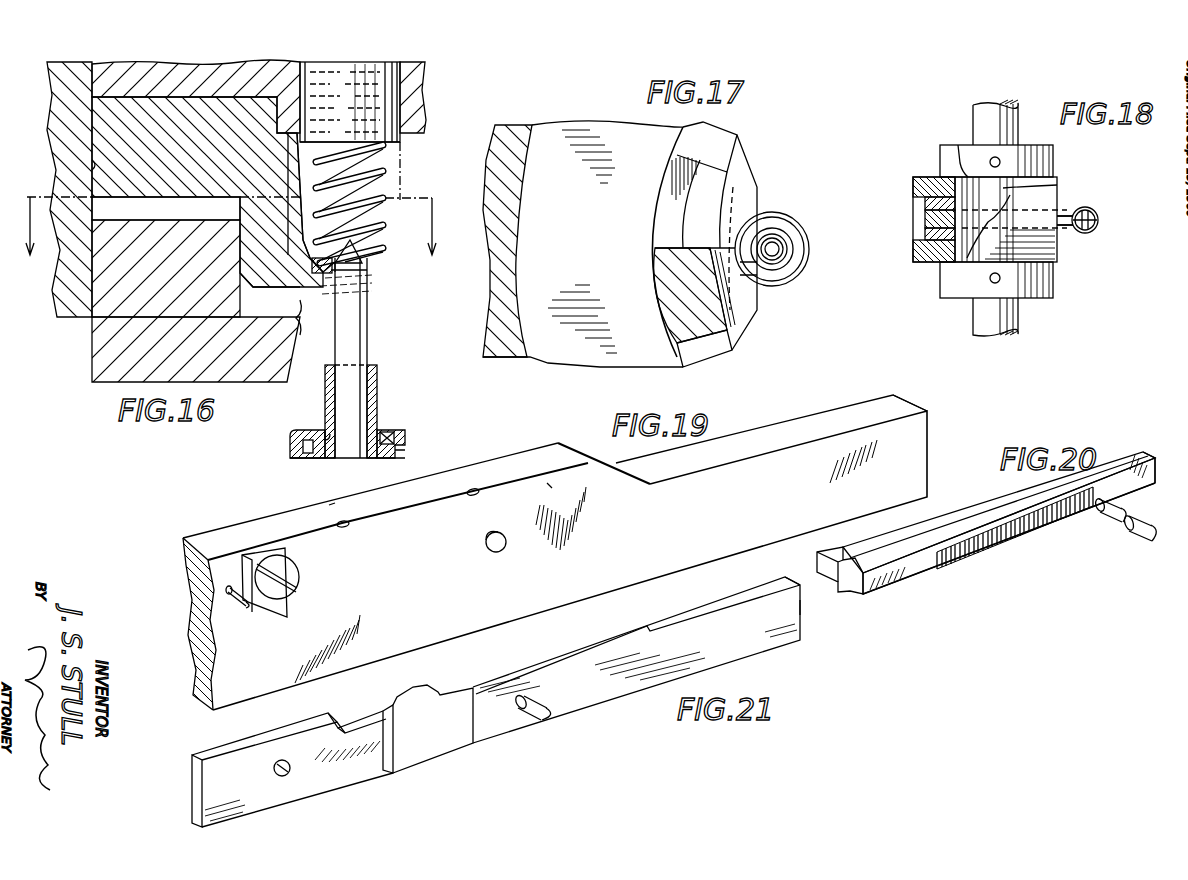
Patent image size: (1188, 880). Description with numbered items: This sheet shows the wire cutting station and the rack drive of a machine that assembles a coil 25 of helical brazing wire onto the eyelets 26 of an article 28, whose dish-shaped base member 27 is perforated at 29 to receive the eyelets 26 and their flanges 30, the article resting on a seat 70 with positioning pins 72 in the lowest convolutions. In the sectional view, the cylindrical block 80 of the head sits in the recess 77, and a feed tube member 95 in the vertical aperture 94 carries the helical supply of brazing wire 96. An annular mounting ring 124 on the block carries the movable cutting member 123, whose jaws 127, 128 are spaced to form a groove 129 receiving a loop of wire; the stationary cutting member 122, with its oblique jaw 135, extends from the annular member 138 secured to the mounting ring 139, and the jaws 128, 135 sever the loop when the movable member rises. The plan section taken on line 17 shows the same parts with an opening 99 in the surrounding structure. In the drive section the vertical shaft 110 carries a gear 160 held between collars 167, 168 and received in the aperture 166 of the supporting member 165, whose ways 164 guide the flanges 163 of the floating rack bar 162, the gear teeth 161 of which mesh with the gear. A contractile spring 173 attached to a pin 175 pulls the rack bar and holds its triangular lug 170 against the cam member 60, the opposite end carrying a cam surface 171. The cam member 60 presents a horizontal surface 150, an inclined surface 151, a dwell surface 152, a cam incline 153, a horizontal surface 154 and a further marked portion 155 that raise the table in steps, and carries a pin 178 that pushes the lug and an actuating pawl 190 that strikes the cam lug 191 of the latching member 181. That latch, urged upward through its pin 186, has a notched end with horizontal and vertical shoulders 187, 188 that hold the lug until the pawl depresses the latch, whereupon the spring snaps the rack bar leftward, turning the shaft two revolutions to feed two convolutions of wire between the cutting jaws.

In FIG. 16, the cylindrical block 80 is at (103, 82).
In FIG. 16, the annular mounting ring 124 is at (100, 122).
In FIG. 16, the recess 77 is at (97, 168).
In FIG. 16, the section line 17— 17 is at (231, 198).
In FIG. 16, the slot 99 is at (72, 279).
In FIG. 17, the slot 99 is at (497, 348).
In FIG. 16, the mounting ring 139 is at (100, 302).
In FIG. 17, the mounting ring 139 is at (557, 355).
In FIG. 16, the annular member 138 is at (105, 370).
In FIG. 17, the annular member 138 is at (717, 137).
In FIG. 16, the groove 129 is at (270, 291).
In FIG. 16, the stationary cutting member 122 is at (315, 244).
In FIG. 17, the stationary cutting member 122 is at (712, 165).
In FIG. 16, the movable cutting member 123 is at (300, 210).
In FIG. 17, the movable cutting member 123 is at (705, 328).
In FIG. 16, the jaw 135 is at (320, 243).
In FIG. 17, the jaw 135 is at (750, 188).
In FIG. 16, the vertical aperture 94 is at (398, 95).
In FIG. 16, the feed tube member 95 is at (400, 141).
In FIG. 16, the helical supply of brazing wire 96 is at (395, 165).
In FIG. 17, the helical supply of brazing wire 96 is at (788, 226).
In FIG. 16, the jaw 127 is at (370, 262).
In FIG. 17, the jaw 127 is at (752, 306).
In FIG. 16, the jaw 128 is at (362, 284).
In FIG. 16, the coil 25 is at (380, 301).
In FIG. 16, the positioning pin 72 is at (367, 335).
In FIG. 17, the positioning pin 72 is at (778, 262).
In FIG. 16, the eyelet 26 is at (378, 385).
In FIG. 16, the article 28 is at (297, 432).
In FIG. 16, the perforation 29 is at (328, 428).
In FIG. 16, the dish-shaped base member 27 is at (406, 437).
In FIG. 16, the flange 30 is at (387, 432).
In FIG. 16, the seat 70 is at (405, 452).
In FIG. 18, the vertical shaft 110 is at (985, 115).
In FIG. 18, the aperture 166 is at (960, 160).
In FIG. 18, the supporting member 165 is at (930, 177).
In FIG. 18, the ways 164 is at (918, 190).
In FIG. 18, the guide flange 163 is at (920, 208).
In FIG. 20, the guide flange 163 is at (985, 504).
In FIG. 18, the gear teeth 161 is at (942, 223).
In FIG. 20, the gear teeth 161 is at (1035, 537).
In FIG. 18, the floating rack bar 162 is at (922, 238).
In FIG. 20, the floating rack bar 162 is at (918, 586).
In FIG. 18, the collar 168 is at (955, 285).
In FIG. 18, the collar 167 is at (1040, 160).
In FIG. 18, the gear 160 is at (1057, 190).
In FIG. 18, the contractile spring 173 is at (1097, 230).
In FIG. 18, the pin 175 is at (1062, 232).
In FIG. 20, the pin 175 is at (1130, 532).
In FIG. 19, the horizontal surface 150 is at (795, 425).
In FIG. 19, the inclined surface 151 is at (600, 455).
In FIG. 19, the horizontal surface 152 is at (527, 478).
In FIG. 19, the cam incline 153 is at (474, 496).
In FIG. 19, the horizontal surface 154 is at (332, 503).
In FIG. 19, the tab 155 is at (343, 527).
In FIG. 19, the cam member 60 is at (555, 552).
In FIG. 19, the pin 178 is at (497, 553).
In FIG. 19, the actuating pawl 190 is at (275, 602).
In FIG. 20, the lug 170 is at (820, 550).
In FIG. 20, the cam surface 171 is at (1135, 476).
In FIG. 21, the latching member 181 is at (606, 702).
In FIG. 21, the cam lug 191 is at (400, 700).
In FIG. 21, the pin 186 is at (533, 715).
In FIG. 21, the vertical shoulder 188 is at (797, 586).
In FIG. 21, the horizontal shoulder 187 is at (800, 602).